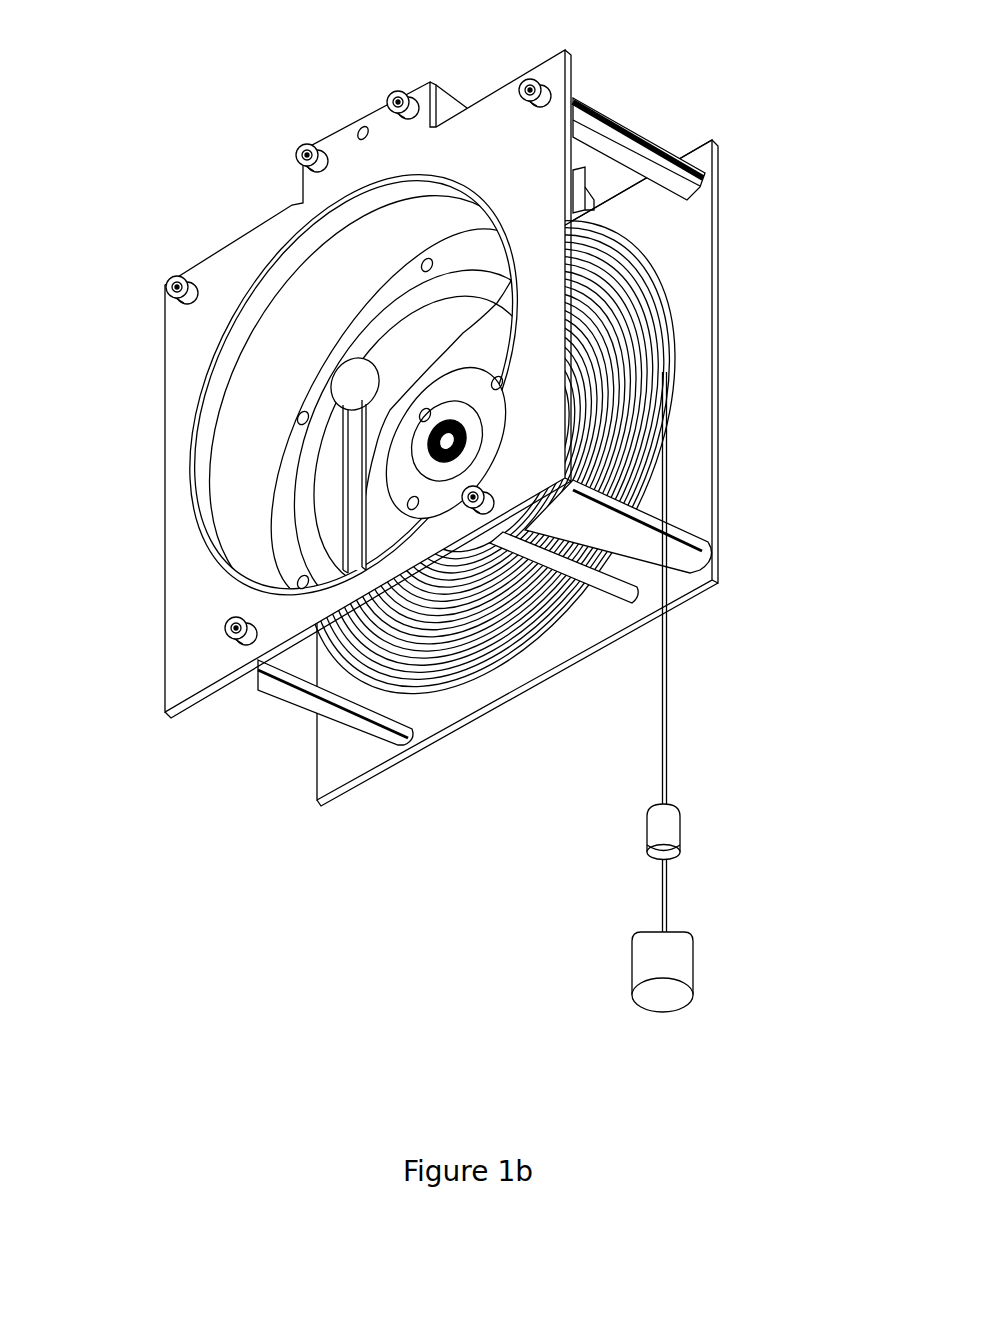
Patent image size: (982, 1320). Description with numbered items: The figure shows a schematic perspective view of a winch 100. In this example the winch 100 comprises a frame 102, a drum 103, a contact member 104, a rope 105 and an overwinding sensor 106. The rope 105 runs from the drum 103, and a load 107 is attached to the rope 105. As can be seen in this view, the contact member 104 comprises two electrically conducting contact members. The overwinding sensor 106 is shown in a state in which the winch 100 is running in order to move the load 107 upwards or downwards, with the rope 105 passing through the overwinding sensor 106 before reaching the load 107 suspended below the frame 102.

The winch 100 is at (195, 1022).
The frame 102 is at (436, 439).
The drum 103 is at (673, 365).
The contact member 104 is at (660, 532).
The rope 105 is at (669, 732).
The overwinding sensor 106 is at (682, 830).
The load 107 is at (695, 972).